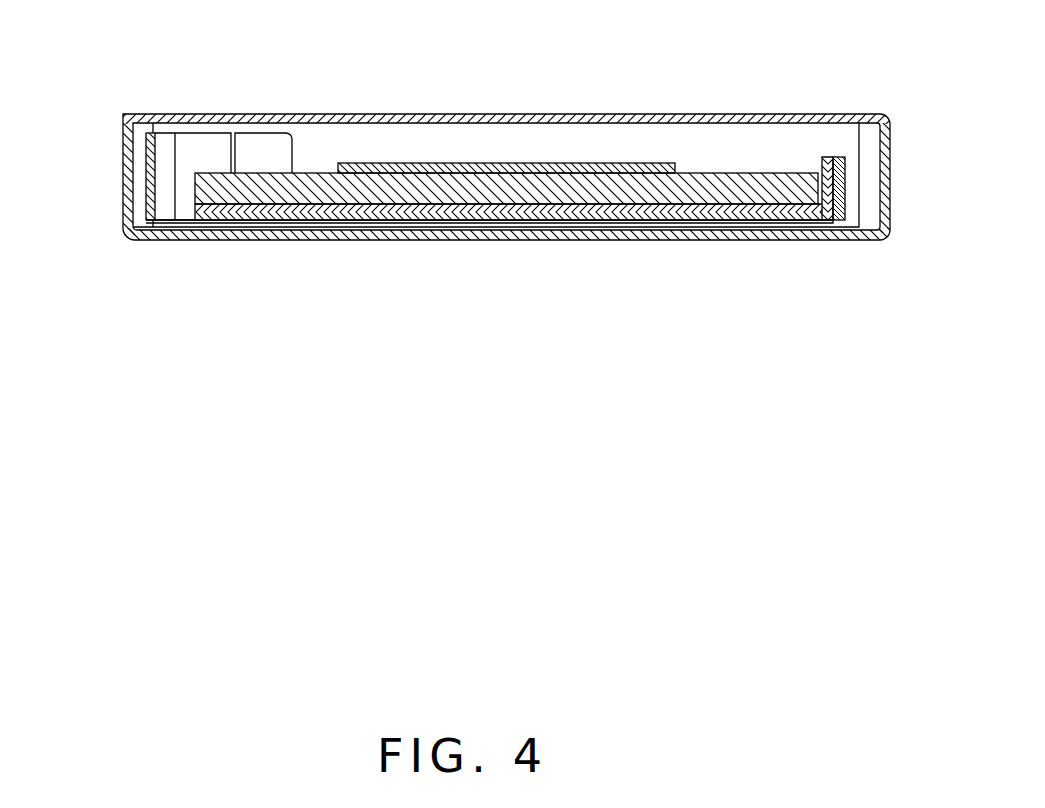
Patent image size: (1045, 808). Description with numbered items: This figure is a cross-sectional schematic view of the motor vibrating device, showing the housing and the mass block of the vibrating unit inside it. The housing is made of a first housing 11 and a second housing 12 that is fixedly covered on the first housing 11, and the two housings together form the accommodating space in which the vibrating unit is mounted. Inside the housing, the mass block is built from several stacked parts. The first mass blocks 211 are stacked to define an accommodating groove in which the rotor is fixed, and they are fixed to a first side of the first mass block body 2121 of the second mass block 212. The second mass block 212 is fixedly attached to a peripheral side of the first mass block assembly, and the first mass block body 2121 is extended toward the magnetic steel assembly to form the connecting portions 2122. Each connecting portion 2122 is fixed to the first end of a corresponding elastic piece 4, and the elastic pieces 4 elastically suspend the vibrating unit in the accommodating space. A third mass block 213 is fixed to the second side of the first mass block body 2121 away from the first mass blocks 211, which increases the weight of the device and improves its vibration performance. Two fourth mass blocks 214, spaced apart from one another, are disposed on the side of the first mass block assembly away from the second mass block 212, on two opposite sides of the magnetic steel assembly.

The first housing 11 is at (136, 235).
The second housing 12 is at (127, 113).
The elastic piece 4 is at (843, 180).
The first mass block 211 is at (724, 175).
The second mass block 212 is at (545, 245).
The first mass block body 2121 is at (757, 218).
The connecting portion 2122 is at (828, 221).
The third mass block 213 is at (595, 224).
The fourth mass block 214 is at (472, 164).